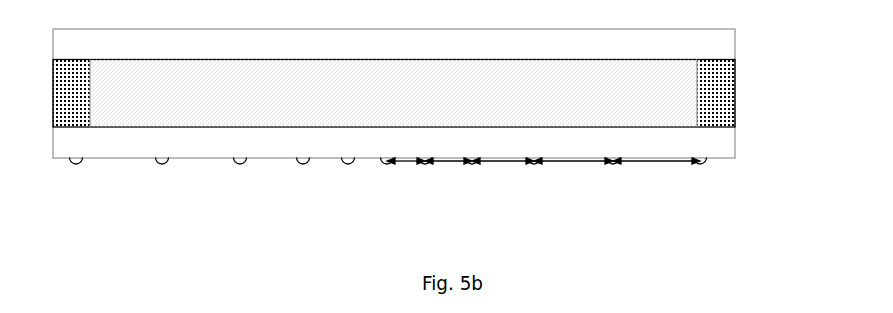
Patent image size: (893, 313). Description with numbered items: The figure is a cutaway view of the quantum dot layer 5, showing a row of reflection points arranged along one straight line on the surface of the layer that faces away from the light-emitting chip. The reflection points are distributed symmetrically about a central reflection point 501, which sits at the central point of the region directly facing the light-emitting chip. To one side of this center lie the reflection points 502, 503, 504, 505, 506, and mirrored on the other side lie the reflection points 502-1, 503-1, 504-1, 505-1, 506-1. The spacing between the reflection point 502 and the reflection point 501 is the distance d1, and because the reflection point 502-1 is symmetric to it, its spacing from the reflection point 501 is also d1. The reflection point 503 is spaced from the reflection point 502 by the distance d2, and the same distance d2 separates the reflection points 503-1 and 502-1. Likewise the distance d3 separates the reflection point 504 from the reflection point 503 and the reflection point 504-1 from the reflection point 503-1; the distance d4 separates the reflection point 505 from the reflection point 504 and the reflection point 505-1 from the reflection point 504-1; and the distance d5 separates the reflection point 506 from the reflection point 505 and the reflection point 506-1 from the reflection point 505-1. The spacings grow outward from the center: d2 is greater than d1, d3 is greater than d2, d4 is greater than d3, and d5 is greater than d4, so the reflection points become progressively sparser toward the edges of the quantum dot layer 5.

The quantum dot layer 5 is at (715, 29).
The reflection point 501 is at (387, 164).
The reflection point 502 is at (425, 164).
The reflection point 503 is at (472, 164).
The reflection point 504 is at (534, 164).
The reflection point 505 is at (613, 164).
The reflection point 506 is at (700, 164).
The reflection point 502-1 is at (348, 164).
The reflection point 503-1 is at (303, 164).
The reflection point 504-1 is at (240, 164).
The reflection point 505-1 is at (162, 164).
The reflection point 506-1 is at (76, 164).
The distance d1 is at (405, 163).
The distance d2 is at (449, 163).
The distance d3 is at (503, 163).
The distance d4 is at (571, 163).
The distance d5 is at (652, 163).